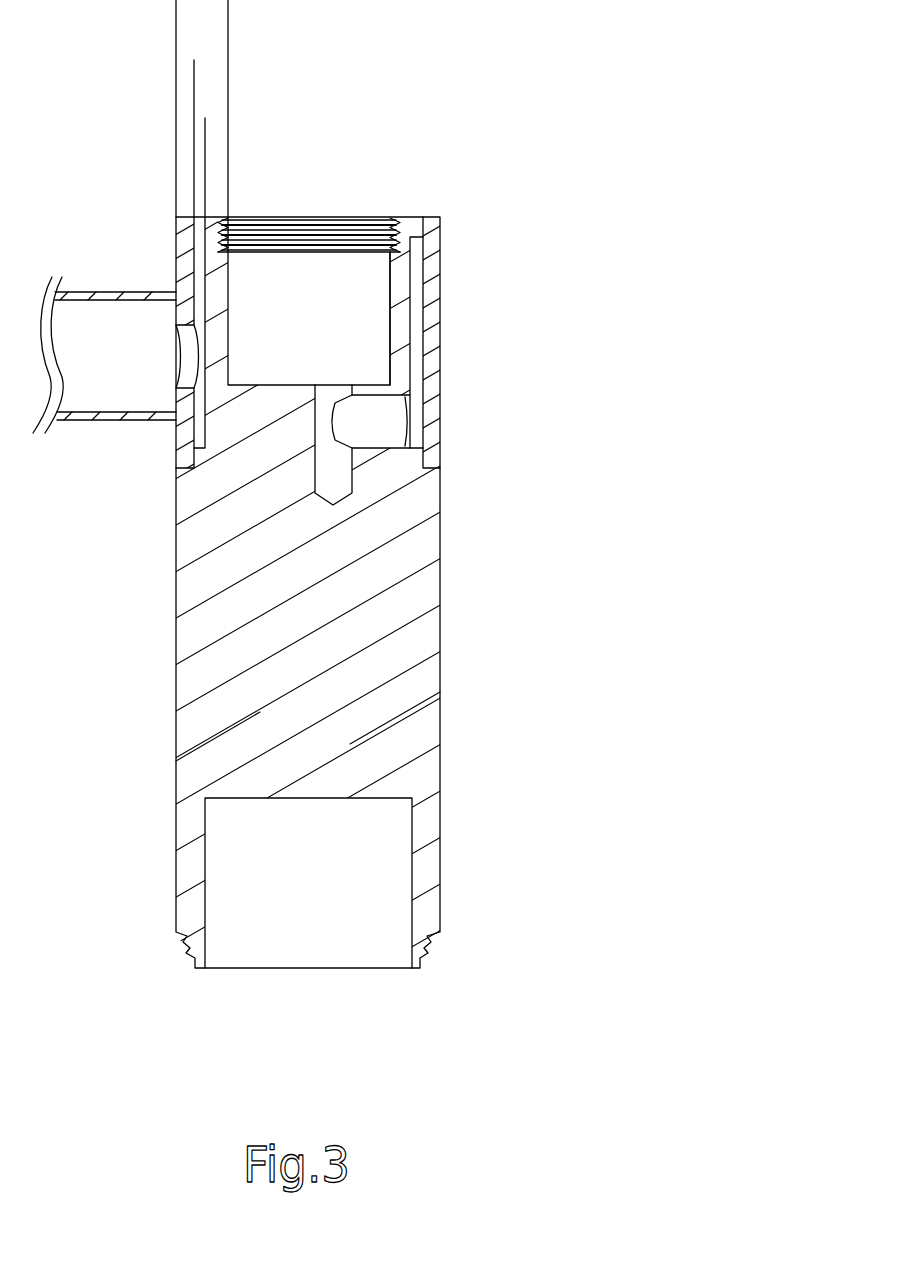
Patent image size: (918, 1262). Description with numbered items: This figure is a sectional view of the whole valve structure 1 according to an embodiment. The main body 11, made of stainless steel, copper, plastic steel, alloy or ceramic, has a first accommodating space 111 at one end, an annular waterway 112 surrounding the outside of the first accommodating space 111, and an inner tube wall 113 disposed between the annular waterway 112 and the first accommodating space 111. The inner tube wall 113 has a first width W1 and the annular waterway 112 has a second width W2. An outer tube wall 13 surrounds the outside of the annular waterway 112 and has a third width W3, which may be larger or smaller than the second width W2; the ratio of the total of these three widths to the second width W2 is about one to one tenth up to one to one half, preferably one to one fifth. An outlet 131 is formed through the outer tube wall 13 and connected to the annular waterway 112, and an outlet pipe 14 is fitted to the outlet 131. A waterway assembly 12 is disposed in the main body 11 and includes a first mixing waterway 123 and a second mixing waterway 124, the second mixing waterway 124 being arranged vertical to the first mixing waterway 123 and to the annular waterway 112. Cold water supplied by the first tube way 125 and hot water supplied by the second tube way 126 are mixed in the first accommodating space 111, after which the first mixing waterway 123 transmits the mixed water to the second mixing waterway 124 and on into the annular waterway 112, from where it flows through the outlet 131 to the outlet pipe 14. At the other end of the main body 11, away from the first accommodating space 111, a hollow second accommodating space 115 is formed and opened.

The valve structure 1 is at (447, 163).
The main body 11 is at (413, 635).
The first accommodating space 111 is at (345, 275).
The annular waterway 112 is at (412, 274).
The inner tube wall 113 is at (392, 340).
The second accommodating space 115 is at (372, 880).
The waterway assembly 12 is at (262, 505).
The first mixing waterway 123 is at (343, 488).
The second mixing waterway 124 is at (377, 427).
The first tube way 125 is at (383, 722).
The second tube way 126 is at (228, 747).
The outer tube wall 13 is at (435, 372).
The outlet 131 is at (187, 347).
The outlet pipe 14 is at (92, 330).
The first width W1 is at (185, 128).
The second width W2 is at (173, 70).
The third width W3 is at (157, 10).